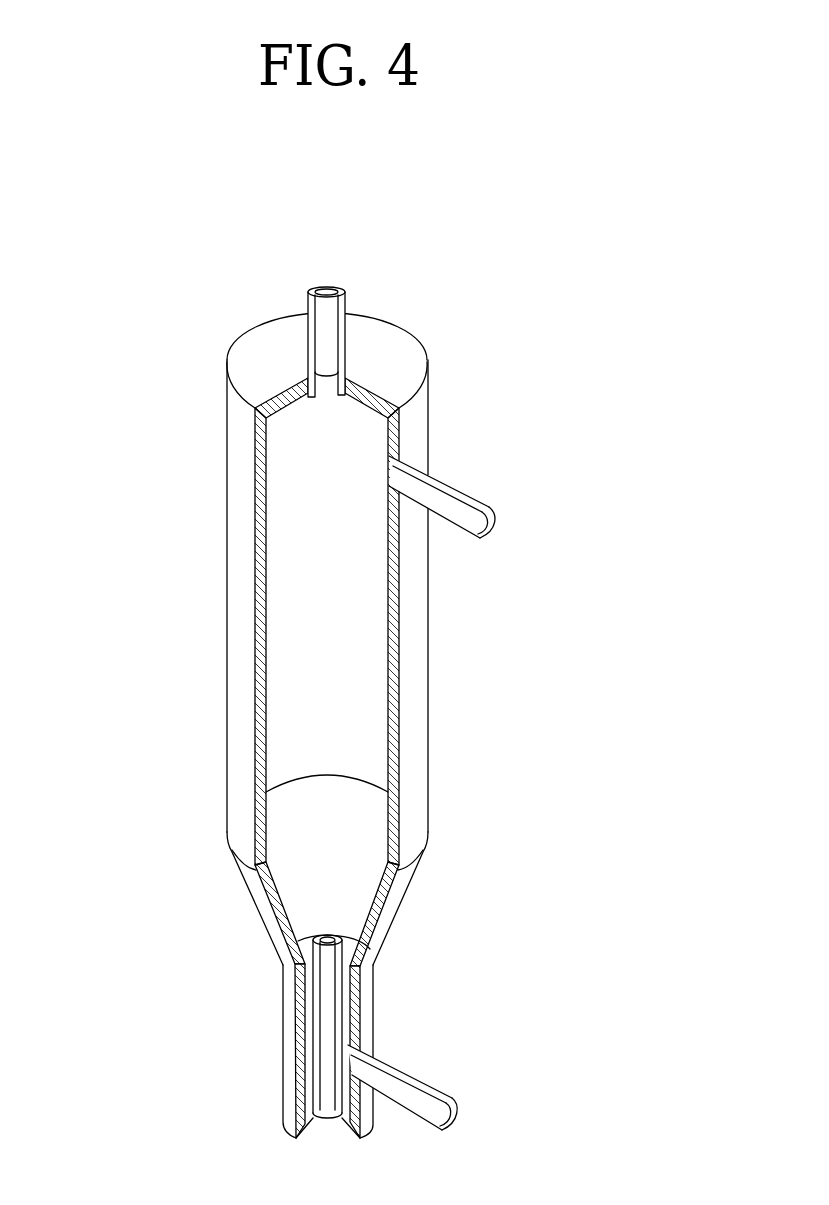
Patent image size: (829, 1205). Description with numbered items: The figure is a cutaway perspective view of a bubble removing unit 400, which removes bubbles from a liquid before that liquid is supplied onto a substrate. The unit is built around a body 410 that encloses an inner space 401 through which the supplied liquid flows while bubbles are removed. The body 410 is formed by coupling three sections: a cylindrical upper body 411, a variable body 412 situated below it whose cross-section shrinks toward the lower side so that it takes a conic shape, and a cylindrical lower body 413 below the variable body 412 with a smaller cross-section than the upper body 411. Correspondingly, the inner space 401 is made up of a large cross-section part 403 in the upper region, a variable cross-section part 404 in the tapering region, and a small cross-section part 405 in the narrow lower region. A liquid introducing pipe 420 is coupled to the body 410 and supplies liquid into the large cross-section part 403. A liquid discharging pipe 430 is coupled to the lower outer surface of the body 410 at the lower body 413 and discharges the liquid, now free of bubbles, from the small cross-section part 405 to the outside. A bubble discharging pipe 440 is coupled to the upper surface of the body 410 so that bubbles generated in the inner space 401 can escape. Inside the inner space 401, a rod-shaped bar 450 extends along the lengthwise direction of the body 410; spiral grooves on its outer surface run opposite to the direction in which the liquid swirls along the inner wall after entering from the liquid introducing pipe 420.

The bubble removing unit 400 is at (483, 207).
The inner space 401 is at (91, 477).
The large cross-section part 403 is at (305, 500).
The variable cross-section part 404 is at (305, 858).
The small cross-section part 405 is at (306, 1019).
The body 410 is at (228, 320).
The upper body 411 is at (417, 714).
The variable body 412 is at (400, 883).
The lower body 413 is at (365, 980).
The liquid introducing pipe 420 is at (460, 488).
The liquid discharging pipe 430 is at (420, 1083).
The bubble discharging pipe 440 is at (325, 296).
The bar 450 is at (308, 1061).